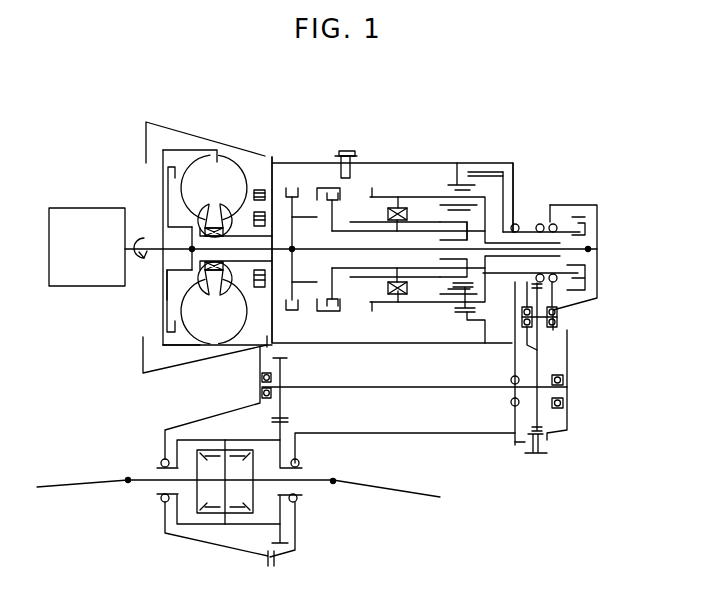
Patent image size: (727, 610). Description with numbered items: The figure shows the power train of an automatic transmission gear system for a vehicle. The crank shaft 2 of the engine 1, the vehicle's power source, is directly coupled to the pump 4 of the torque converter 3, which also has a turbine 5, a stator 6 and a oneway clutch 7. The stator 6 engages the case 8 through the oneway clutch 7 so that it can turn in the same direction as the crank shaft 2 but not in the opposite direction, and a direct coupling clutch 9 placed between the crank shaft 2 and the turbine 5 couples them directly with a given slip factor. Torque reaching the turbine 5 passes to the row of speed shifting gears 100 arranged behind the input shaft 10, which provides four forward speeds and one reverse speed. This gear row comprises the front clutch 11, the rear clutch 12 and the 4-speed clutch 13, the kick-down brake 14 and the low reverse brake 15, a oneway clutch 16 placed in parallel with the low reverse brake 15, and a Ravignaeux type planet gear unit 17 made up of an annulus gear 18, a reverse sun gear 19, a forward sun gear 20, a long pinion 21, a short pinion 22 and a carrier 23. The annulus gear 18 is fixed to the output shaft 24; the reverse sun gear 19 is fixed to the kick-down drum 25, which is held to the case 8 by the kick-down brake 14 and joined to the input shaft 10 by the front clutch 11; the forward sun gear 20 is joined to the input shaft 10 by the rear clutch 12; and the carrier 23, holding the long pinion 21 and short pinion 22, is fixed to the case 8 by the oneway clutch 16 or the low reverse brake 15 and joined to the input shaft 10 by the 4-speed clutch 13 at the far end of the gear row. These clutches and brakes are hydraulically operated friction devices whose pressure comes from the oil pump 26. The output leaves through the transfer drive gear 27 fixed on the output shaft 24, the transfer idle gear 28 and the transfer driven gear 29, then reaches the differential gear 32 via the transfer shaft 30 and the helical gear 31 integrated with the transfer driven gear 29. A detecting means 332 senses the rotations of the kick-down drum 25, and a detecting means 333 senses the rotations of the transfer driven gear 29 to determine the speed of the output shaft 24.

The engine 1 is at (73, 208).
The crank shaft 2 is at (150, 244).
The torque converter 3 is at (196, 162).
The pump 4 is at (235, 320).
The turbine 5 is at (168, 347).
The stator 6 is at (197, 330).
The oneway clutch 7 is at (175, 285).
The case 8 is at (270, 160).
The direct coupling clutch 9 is at (163, 184).
The input shaft 10 is at (192, 249).
The front clutch 11 is at (292, 188).
The rear clutch 12 is at (335, 160).
The 4-speed clutch 13 is at (584, 220).
The kick-down brake 14 is at (322, 188).
The low reverse brake 15 is at (388, 192).
The oneway clutch 16 is at (397, 200).
The planet gear unit 17 is at (473, 170).
The annulus gear 18 is at (498, 172).
The reverse sun gear 19 is at (450, 214).
The forward sun gear 20 is at (462, 222).
The long pinion 21 is at (456, 156).
The short pinion 22 is at (488, 336).
The carrier 23 is at (441, 318).
The output shaft 24 is at (555, 206).
The kick-down drum 25 is at (351, 170).
The oil pump 26 is at (259, 189).
The transfer drive gear 27 is at (540, 224).
The transfer idle gear 28 is at (558, 322).
The transfer driven gear 29 is at (553, 413).
The transfer shaft 30 is at (392, 392).
The helical gear 31 is at (285, 395).
The differential gear 32 is at (228, 530).
The row of speed shifting gears 100 is at (408, 143).
The means for detecting the number of rotations of the kick-down drum 332 is at (351, 151).
The means for detecting the number of rotations of the transfer driven gear 333 is at (548, 453).